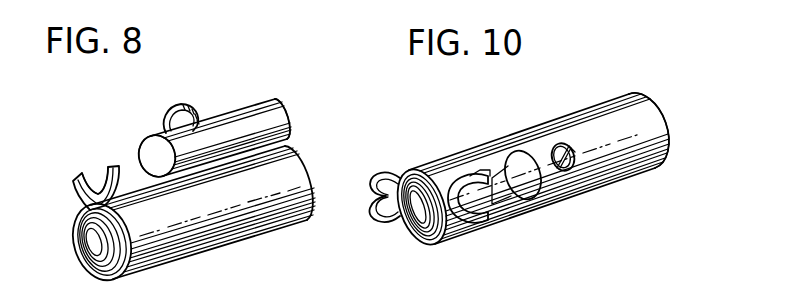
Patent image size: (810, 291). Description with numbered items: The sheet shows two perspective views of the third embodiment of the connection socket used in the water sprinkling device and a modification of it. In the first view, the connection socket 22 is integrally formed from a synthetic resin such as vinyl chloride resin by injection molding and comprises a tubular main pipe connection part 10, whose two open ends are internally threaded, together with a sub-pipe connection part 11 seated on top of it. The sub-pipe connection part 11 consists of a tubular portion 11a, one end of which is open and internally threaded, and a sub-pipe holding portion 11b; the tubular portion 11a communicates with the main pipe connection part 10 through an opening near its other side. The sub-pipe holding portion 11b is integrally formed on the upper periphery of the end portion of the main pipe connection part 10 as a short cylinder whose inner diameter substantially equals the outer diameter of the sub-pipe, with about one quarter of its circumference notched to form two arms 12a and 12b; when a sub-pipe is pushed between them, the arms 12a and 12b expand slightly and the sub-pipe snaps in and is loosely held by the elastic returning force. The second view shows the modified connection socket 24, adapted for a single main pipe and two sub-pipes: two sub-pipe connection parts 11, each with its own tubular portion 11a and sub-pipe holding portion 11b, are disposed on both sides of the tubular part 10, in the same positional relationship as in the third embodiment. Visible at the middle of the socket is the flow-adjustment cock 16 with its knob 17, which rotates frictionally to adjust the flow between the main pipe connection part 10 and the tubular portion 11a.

In FIG. 8, the main pipe connection part 10 is at (279, 171).
In FIG. 10, the main pipe connection part 10 is at (476, 156).
In FIG. 8, the sub-pipe connection part 11 is at (133, 146).
In FIG. 10, the sub-pipe connection part 11 is at (504, 192).
In FIG. 8, the tubular portion 11a is at (233, 126).
In FIG. 10, the tubular portion 11a is at (589, 107).
In FIG. 8, the sub-pipe holding portion 11b is at (90, 172).
In FIG. 10, the sub-pipe holding portion 11b is at (374, 212).
In FIG. 8, the arm 12a is at (86, 188).
In FIG. 8, the arm 12b is at (96, 170).
In FIG. 10, the flow-adjustment cock 16 is at (561, 152).
In FIG. 8, the knob 17 is at (168, 119).
In FIG. 10, the knob 17 is at (576, 155).
In FIG. 8, the connection socket 22 is at (205, 108).
In FIG. 10, the connection socket 24 is at (504, 164).